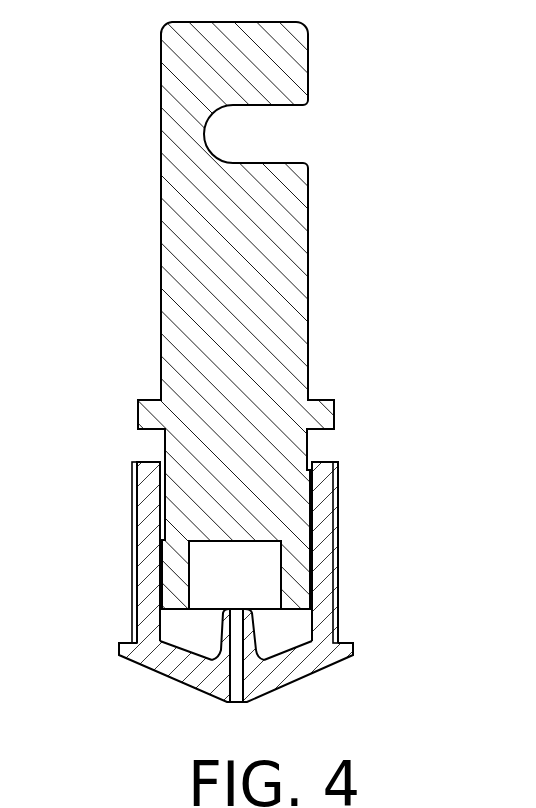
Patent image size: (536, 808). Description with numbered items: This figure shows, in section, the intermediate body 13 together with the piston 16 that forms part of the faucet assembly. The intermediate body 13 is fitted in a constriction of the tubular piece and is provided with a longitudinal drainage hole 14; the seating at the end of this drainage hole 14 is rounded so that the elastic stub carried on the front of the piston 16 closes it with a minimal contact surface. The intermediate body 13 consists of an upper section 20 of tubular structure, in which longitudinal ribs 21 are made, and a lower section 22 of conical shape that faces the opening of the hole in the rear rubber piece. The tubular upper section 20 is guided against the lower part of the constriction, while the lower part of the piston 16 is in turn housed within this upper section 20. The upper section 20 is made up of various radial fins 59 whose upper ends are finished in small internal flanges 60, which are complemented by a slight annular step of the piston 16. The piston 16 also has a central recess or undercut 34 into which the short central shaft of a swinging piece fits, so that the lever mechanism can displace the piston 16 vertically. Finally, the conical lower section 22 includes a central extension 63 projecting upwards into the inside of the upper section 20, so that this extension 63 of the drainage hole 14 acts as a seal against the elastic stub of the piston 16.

The intermediate body 13 is at (250, 526).
The longitudinal drainage hole 14 is at (237, 673).
The piston 16 is at (236, 396).
The upper section 20 is at (250, 526).
The longitudinal ribs 21 is at (137, 557).
The lower section 22 is at (293, 663).
The central recess 34 is at (258, 135).
The radial fins 59 is at (148, 598).
The internal flanges 60 is at (317, 462).
The central extension 63 is at (168, 540).